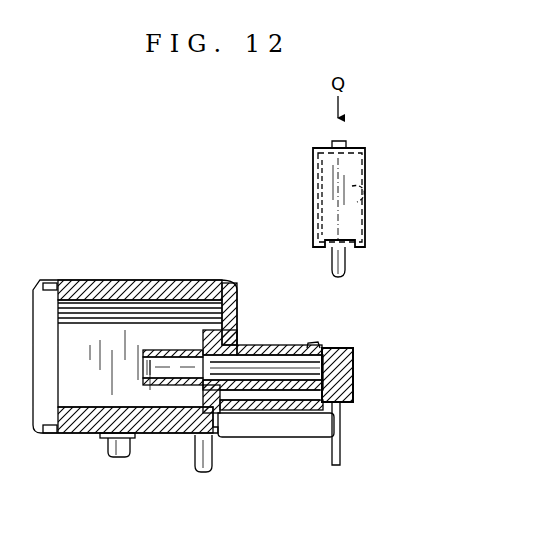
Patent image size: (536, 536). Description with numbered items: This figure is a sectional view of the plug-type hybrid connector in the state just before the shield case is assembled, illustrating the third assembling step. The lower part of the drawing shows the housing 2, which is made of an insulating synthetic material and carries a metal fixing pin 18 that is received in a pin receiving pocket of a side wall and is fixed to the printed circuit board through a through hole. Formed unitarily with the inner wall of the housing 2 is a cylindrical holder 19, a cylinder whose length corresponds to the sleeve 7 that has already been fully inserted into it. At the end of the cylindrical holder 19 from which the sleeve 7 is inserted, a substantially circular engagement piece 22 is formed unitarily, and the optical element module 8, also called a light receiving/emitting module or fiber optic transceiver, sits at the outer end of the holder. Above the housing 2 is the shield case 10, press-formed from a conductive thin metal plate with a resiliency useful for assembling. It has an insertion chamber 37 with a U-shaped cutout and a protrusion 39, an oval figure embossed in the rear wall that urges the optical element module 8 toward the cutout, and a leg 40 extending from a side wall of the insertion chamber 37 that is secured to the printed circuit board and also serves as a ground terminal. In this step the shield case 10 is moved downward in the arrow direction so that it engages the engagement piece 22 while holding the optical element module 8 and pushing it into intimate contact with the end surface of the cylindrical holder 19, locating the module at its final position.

The housing 2 is at (32, 380).
The metal fixing pin 18 is at (192, 457).
The cylindrical holder 19 is at (253, 344).
The sleeve 7 is at (270, 370).
The engagement piece 22 is at (314, 346).
The optical element module 8 is at (338, 348).
The shield case 10 is at (315, 185).
The insertion chamber 37 is at (326, 213).
The protrusion 39 is at (362, 205).
The leg 40 is at (342, 262).